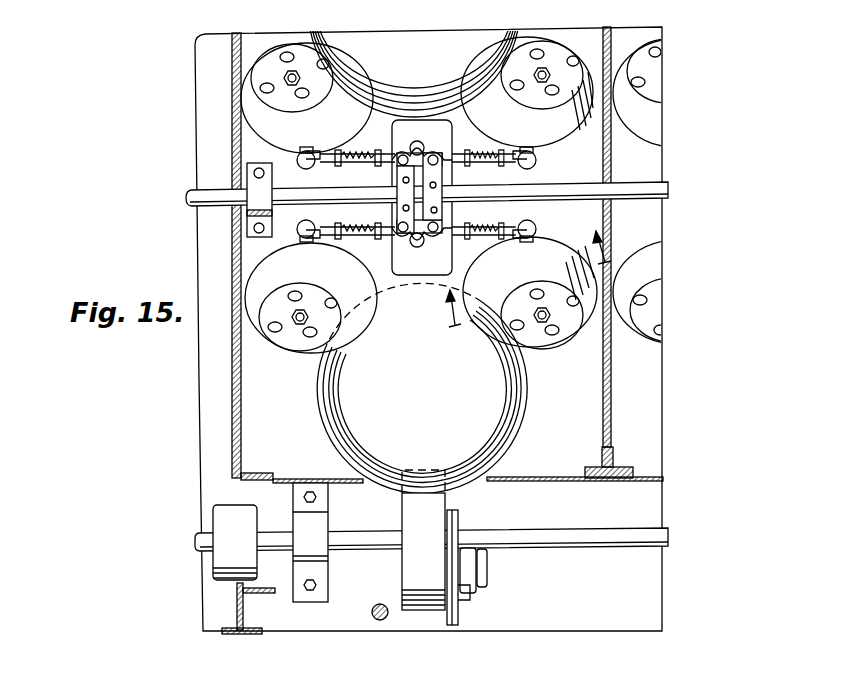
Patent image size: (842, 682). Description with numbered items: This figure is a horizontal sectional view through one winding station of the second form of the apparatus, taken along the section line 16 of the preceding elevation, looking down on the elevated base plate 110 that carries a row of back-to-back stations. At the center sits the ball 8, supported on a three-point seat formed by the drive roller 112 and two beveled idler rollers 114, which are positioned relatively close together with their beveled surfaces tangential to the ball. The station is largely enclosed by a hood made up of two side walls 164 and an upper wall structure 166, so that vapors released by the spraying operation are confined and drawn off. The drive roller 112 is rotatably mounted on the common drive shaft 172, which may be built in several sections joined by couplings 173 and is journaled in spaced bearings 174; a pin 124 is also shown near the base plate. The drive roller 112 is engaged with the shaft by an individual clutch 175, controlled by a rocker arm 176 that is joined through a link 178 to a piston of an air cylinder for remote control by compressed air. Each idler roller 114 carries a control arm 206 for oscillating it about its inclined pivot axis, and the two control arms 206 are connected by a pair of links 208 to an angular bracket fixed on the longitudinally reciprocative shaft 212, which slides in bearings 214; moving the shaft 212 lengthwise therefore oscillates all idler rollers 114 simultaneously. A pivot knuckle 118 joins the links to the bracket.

The drive wheel 8 is at (497, 420).
The section line 16 is at (514, 271).
The base plate 110 is at (664, 598).
The drive roller 112 is at (438, 608).
The beveled idler roller 114 is at (246, 124).
The pivot knuckle 118 is at (413, 147).
The pin 124 is at (382, 621).
The side wall 164 is at (238, 430).
The upper wall structure 166 is at (580, 482).
The drive shaft 172 is at (600, 537).
The coupling 173 is at (215, 567).
The bearing 174 is at (312, 568).
The clutch 175 is at (440, 566).
The rocker arm 176 is at (466, 595).
The link 178 is at (478, 586).
The control arm 206 is at (311, 150).
The link 208 is at (357, 163).
The shaft 212 is at (645, 190).
The bearing 214 is at (247, 217).